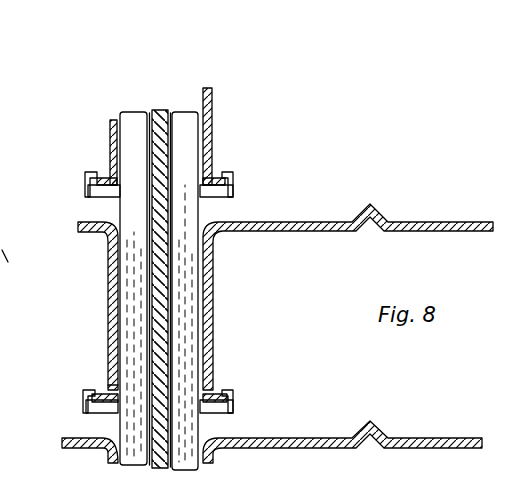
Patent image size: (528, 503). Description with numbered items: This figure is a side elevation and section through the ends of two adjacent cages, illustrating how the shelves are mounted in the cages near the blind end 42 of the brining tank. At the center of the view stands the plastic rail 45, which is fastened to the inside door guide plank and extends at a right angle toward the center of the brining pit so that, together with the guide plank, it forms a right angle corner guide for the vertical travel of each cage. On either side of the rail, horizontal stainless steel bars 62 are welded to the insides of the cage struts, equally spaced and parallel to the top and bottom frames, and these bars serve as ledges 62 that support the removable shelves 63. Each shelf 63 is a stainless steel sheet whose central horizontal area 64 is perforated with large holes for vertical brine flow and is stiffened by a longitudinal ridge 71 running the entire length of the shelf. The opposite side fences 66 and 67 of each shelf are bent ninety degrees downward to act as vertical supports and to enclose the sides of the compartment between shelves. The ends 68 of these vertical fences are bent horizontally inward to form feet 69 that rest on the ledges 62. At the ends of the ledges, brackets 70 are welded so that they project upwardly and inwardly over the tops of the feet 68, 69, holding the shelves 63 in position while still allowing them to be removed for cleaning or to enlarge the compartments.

The blind end 42 is at (0, 244).
The plastic rail 45 is at (161, 108).
The horizontal stainless steel bars 62 is at (101, 196).
The removable shelves 63 is at (457, 221).
The central horizontal area 64 is at (251, 325).
The side fence 66 is at (251, 325).
The side fence 67 is at (107, 318).
The ends of the vertical fences 68 is at (107, 176).
The feet 69 is at (104, 393).
The brackets 70 is at (88, 173).
The longitudinal ridge 71 is at (251, 325).